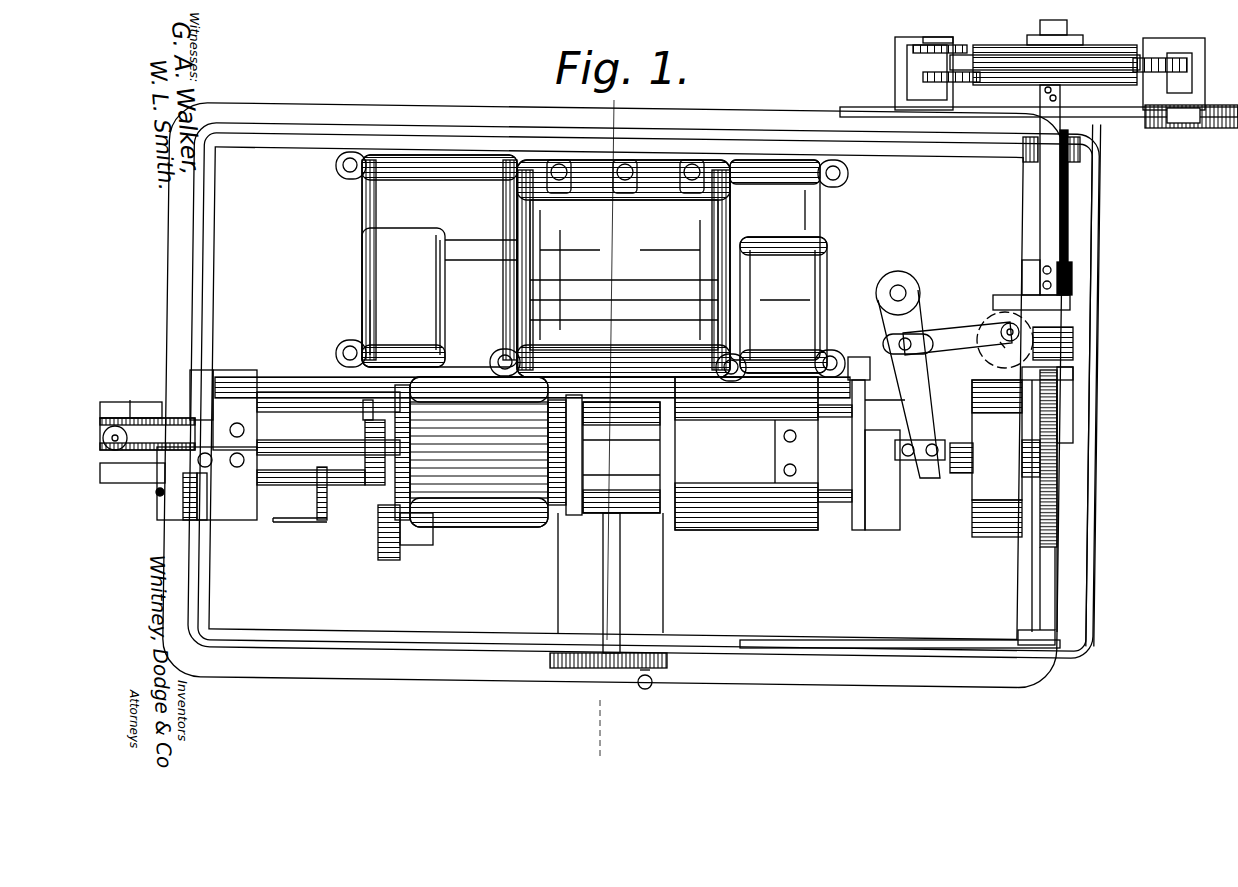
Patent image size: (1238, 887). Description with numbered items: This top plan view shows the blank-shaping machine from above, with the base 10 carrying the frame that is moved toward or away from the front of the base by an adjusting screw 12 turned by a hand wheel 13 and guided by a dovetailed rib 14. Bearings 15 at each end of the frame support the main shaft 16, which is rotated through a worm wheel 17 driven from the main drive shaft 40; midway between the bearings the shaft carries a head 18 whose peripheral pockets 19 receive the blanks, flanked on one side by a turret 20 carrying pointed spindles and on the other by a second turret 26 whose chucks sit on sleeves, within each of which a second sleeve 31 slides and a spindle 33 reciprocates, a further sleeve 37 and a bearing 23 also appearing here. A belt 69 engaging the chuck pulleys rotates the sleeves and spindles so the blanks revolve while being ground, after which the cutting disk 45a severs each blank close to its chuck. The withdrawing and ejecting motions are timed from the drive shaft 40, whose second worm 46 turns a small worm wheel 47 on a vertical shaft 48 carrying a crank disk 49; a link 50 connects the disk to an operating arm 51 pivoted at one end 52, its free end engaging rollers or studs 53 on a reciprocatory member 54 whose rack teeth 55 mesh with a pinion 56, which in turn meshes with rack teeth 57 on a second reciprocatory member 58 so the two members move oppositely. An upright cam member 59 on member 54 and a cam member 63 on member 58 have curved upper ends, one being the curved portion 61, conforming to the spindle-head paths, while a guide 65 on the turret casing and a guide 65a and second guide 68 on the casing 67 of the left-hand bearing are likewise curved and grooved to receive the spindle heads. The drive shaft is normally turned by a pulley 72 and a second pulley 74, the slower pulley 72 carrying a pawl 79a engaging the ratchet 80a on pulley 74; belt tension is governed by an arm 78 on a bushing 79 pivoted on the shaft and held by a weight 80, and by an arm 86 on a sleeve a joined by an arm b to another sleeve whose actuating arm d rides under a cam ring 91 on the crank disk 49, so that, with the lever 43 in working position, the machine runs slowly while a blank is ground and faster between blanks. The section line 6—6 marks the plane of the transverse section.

The base 10 is at (447, 682).
The section line 6 is at (614, 100).
The belt 69 is at (405, 385).
The guide 65 is at (860, 380).
The reciprocatory member 54 is at (160, 400).
The pinion 56 is at (112, 425).
The rack teeth 55 is at (142, 397).
The second reciprocatory member 58 is at (107, 478).
The casing 67 is at (252, 382).
The guide 65a is at (205, 382).
The rack teeth 57 is at (157, 492).
The second guide 68 is at (160, 497).
The upright cam member 59 is at (205, 512).
The cam member 63 is at (320, 522).
The spindle 33 is at (300, 430).
The second sleeve 31 is at (365, 405).
The sleeve 37 is at (370, 427).
The second turret 26 is at (471, 452).
The cutting disk 45a is at (528, 452).
The head 18 is at (580, 512).
The peripheral pockets 19 is at (662, 490).
The turret 20 is at (746, 453).
The bearing 23 is at (830, 410).
The adjusting screw 12 is at (615, 585).
The dovetailed rib 14 is at (558, 588).
The hand wheel 13 is at (600, 668).
The curved portion 61 is at (857, 530).
The operating arm 51 is at (912, 400).
The rollers or studs 53 is at (930, 462).
The pivot end 52 is at (908, 290).
The link 50 is at (955, 333).
The crank disk 49 is at (985, 350).
The vertical shaft 48 is at (1005, 348).
The bearings 15 is at (975, 436).
The main shaft 16 is at (962, 455).
The worm wheel 17 is at (1052, 508).
The small worm wheel 47 is at (1073, 378).
The second worm 46 is at (1075, 335).
The cam ring 91 is at (1070, 312).
The actuating arm d is at (1072, 300).
The main drive shaft 40 is at (1075, 272).
The arm b is at (1050, 195).
The lever 43 is at (1095, 218).
The arm 86 is at (1022, 95).
The bushing 79 is at (1028, 120).
The arm 78 is at (900, 62).
The ratchet 80a is at (1030, 40).
The pawl 79a is at (1070, 48).
The pulley 72 is at (1125, 45).
The sleeve a is at (1086, 92).
The second pulley 74 is at (1095, 85).
The weight 80 is at (1200, 128).